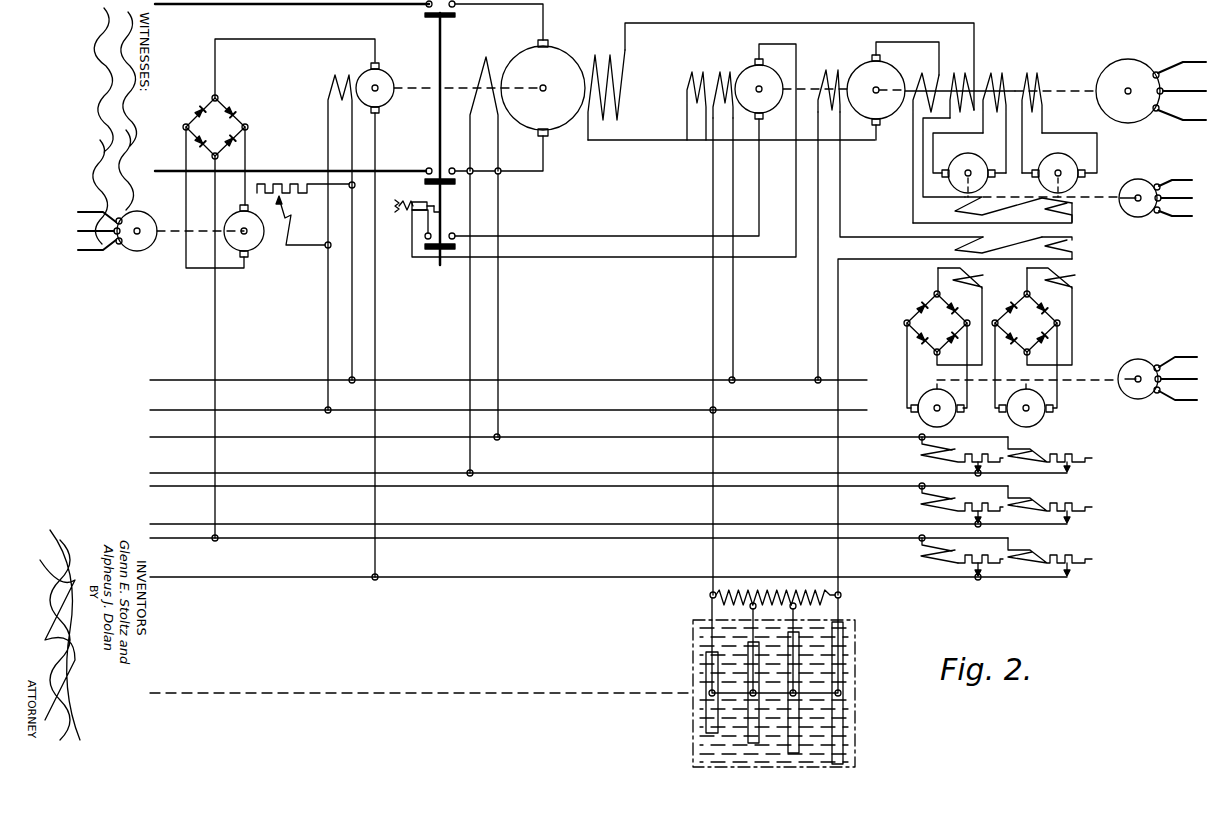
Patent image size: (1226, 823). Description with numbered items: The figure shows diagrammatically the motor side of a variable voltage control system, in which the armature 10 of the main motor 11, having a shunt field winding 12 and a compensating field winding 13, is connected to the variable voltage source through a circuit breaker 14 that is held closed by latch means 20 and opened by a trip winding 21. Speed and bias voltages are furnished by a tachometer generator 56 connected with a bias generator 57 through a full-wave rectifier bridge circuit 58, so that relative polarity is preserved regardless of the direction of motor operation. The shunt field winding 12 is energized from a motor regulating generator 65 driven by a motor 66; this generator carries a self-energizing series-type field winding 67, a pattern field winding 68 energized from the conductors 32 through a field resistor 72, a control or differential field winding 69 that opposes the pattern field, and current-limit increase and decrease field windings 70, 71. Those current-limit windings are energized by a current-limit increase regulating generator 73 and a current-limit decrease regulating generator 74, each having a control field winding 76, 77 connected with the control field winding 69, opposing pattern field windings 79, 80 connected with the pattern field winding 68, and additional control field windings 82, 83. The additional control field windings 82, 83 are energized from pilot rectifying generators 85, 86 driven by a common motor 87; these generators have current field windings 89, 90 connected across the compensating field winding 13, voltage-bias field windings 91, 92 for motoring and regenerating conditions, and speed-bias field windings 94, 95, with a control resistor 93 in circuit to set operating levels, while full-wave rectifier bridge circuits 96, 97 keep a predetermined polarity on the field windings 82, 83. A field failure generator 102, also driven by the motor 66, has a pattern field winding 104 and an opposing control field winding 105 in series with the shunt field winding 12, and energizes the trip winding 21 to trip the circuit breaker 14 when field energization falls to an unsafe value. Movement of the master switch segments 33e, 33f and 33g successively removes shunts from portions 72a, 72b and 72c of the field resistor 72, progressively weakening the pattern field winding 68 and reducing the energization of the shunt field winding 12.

The armature 10 is at (566, 123).
The main motor 11 is at (607, 35).
The shunt field winding 12 is at (621, 100).
The compensating field winding 13 is at (478, 89).
The circuit breaker 14 is at (400, 237).
The latch means 20 is at (440, 214).
The trip winding 21 is at (417, 201).
The conductors 32 is at (648, 388).
The segment 33e is at (702, 672).
The segment 33f is at (747, 683).
The segment 33g is at (787, 683).
The tachometer generator 56 is at (389, 104).
The bias generator 57 is at (289, 278).
The full-wave rectifier bridge circuit 58 is at (225, 125).
The motor regulating generator 65 is at (911, 62).
The motor 66 is at (1110, 67).
The self-energizing series-type field winding 67 is at (926, 138).
The pattern field winding 68 is at (837, 74).
The control or differential field winding 69 is at (962, 84).
The current-limit increase field winding 70 is at (995, 109).
The current-limit decrease field winding 71 is at (1034, 109).
The field resistor 72 is at (794, 592).
The portion of field resistor 72a is at (734, 592).
The portion of field resistor 72b is at (772, 592).
The portion of field resistor 72c is at (813, 592).
The current-limit increase regulating generator 73 is at (959, 152).
The current-limit decrease regulating generator 74 is at (1086, 152).
The control field winding 76 is at (955, 210).
The control field winding 77 is at (1075, 209).
The pattern field winding 79 is at (955, 249).
The pattern field winding 80 is at (1073, 245).
The additional control field winding 82 is at (978, 275).
The additional control field winding 83 is at (1073, 275).
The pilot rectifying generator 85 is at (912, 415).
The pilot rectifying generator 86 is at (1090, 417).
The common motor 87 is at (1136, 359).
The current field winding 89 is at (918, 455).
The current field winding 90 is at (1035, 457).
The voltage-bias field winding 91 is at (920, 504).
The voltage-bias field winding 92 is at (1035, 505).
The control resistor 93 is at (969, 561).
The speed-bias field winding 94 is at (920, 557).
The speed-bias field winding 95 is at (1025, 557).
The full-wave rectifier bridge circuit 96 is at (930, 319).
The full-wave rectifier bridge circuit 97 is at (1013, 316).
The field failure generator 102 is at (757, 44).
The pattern field winding 104 is at (732, 76).
The control field winding 105 is at (690, 94).